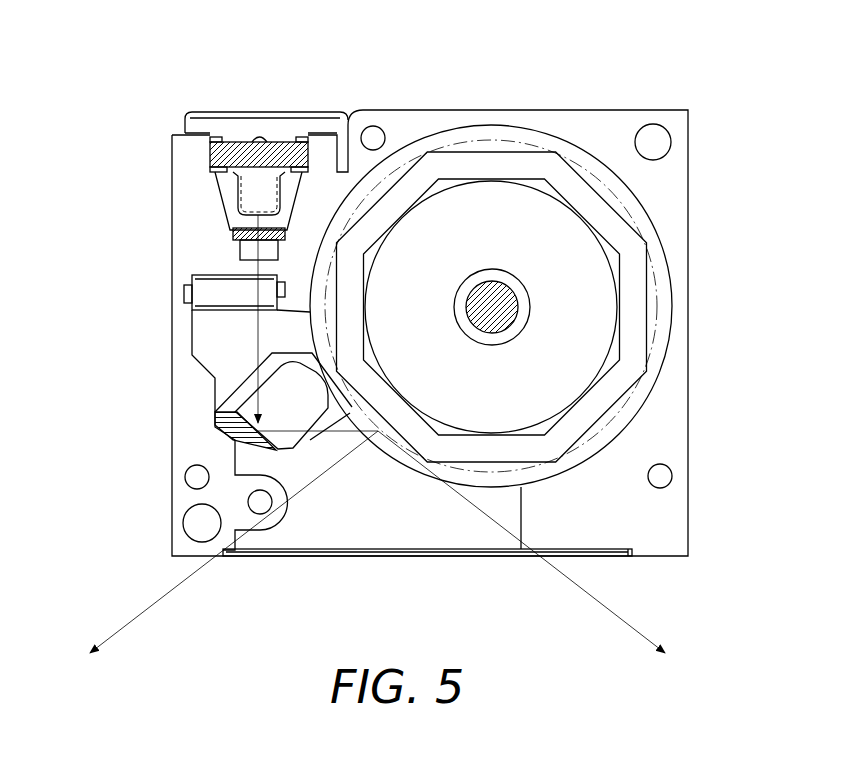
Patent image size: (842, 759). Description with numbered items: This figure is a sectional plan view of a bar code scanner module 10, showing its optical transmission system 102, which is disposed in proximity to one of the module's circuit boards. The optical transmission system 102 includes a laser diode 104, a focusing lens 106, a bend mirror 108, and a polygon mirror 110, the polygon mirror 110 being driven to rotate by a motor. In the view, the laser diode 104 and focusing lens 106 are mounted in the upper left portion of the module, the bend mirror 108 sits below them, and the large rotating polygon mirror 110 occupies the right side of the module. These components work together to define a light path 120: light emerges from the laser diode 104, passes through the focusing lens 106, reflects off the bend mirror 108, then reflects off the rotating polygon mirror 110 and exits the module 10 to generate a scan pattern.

The bar code scanner module 10 is at (121, 78).
The optical transmission system 102 is at (356, 580).
The laser diode 104 is at (238, 192).
The focusing lens 106 is at (233, 232).
The bend mirror 108 is at (303, 467).
The polygon mirror 110 is at (647, 292).
The light path 120 is at (257, 325).